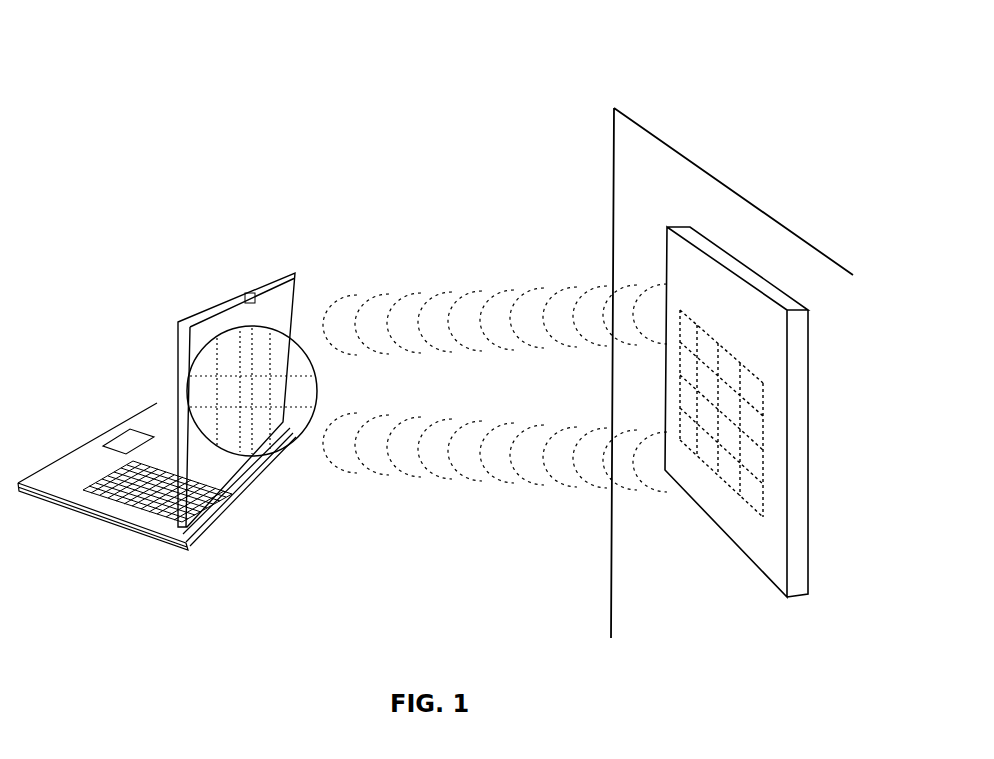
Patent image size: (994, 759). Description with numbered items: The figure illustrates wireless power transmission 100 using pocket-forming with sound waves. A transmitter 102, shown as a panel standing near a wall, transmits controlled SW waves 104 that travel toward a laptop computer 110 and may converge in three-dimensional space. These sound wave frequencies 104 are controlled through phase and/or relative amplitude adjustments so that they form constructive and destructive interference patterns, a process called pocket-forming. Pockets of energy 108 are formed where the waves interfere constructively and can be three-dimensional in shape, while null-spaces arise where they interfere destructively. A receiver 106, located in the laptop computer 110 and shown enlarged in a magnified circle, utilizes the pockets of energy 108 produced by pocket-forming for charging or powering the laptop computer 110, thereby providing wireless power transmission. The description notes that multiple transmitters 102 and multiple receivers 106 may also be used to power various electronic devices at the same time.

The wireless power transmission 100 is at (102, 118).
The transmitter 102 is at (728, 268).
The controlled SW waves 104 is at (493, 287).
The receiver 106 is at (228, 425).
The pockets of energy 108 is at (228, 325).
The laptop computer 110 is at (292, 273).